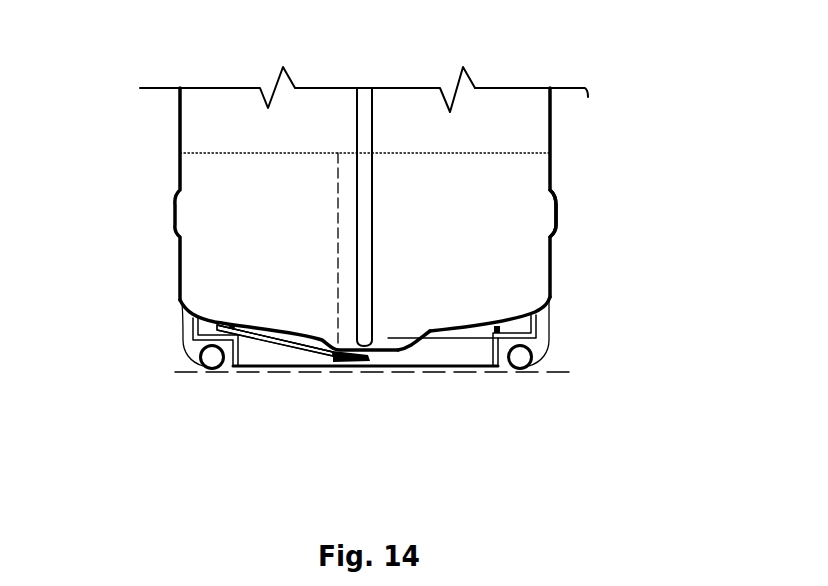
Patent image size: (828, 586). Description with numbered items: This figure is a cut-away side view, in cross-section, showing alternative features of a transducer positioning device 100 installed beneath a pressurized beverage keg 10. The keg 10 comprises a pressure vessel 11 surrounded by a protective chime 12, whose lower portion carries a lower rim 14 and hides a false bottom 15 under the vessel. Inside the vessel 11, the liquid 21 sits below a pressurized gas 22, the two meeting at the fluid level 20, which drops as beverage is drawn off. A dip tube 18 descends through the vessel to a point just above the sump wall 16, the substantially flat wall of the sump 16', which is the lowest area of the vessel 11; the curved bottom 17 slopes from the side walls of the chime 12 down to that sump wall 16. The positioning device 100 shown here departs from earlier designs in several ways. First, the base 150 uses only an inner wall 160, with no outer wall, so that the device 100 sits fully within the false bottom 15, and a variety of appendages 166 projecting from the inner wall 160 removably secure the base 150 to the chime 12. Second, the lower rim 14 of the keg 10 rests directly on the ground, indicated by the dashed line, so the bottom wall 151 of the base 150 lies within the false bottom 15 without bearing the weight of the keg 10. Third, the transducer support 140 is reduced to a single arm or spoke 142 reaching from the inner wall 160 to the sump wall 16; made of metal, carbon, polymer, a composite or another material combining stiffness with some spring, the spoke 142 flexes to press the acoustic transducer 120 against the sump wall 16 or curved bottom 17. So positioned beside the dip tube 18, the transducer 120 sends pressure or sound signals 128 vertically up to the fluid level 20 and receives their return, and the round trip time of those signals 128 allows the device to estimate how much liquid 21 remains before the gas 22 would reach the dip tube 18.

The keg 10 is at (178, 135).
The pressure vessel 11 is at (243, 134).
The chime 12 is at (550, 306).
The lower rim 14 is at (200, 361).
The false bottom 15 is at (258, 350).
The sump wall 16 is at (302, 395).
The sump 16' is at (443, 397).
The curved bottom 17 is at (428, 333).
The dip tube 18 is at (364, 203).
The fluid level 20 is at (523, 152).
The liquid 21 is at (522, 213).
The pressurized gas 22 is at (508, 110).
The positioning device 100 is at (226, 366).
The transducer 120 is at (332, 354).
The signals 128 is at (338, 240).
The transducer support 140 is at (296, 352).
The spoke 142 is at (275, 392).
The base 150 is at (547, 338).
The bottom wall 151 is at (466, 370).
The inner wall 160 is at (473, 364).
The appendages 166 is at (192, 333).